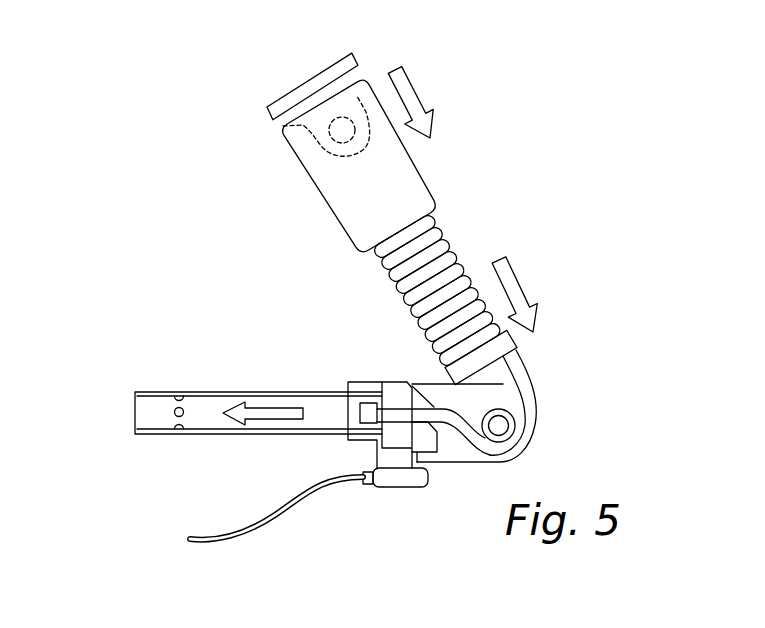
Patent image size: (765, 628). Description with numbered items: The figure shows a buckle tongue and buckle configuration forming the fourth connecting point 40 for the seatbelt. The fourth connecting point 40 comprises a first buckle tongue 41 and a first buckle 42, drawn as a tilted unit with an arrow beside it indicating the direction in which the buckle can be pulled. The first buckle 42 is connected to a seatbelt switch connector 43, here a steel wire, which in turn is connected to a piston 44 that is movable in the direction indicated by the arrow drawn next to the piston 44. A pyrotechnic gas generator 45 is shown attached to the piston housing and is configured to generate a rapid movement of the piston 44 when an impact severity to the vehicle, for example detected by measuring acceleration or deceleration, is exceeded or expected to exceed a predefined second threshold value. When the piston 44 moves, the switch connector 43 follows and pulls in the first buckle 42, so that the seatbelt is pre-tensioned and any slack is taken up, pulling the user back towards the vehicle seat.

The fourth connecting point 40 is at (392, 206).
The first buckle tongue 41 is at (312, 86).
The first buckle 42 is at (323, 200).
The seatbelt switch connector 43 is at (512, 378).
The piston 44 is at (353, 402).
The pyrotechnic gas generator 45 is at (365, 478).